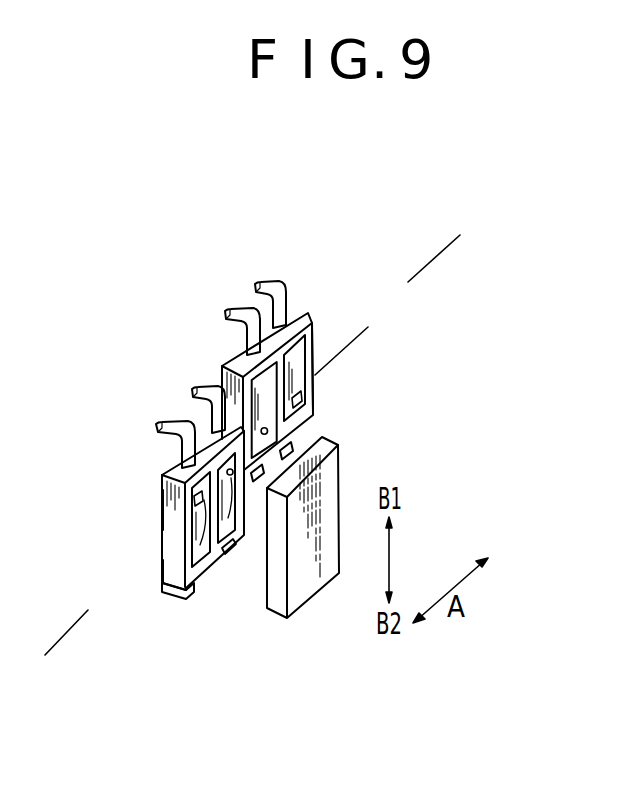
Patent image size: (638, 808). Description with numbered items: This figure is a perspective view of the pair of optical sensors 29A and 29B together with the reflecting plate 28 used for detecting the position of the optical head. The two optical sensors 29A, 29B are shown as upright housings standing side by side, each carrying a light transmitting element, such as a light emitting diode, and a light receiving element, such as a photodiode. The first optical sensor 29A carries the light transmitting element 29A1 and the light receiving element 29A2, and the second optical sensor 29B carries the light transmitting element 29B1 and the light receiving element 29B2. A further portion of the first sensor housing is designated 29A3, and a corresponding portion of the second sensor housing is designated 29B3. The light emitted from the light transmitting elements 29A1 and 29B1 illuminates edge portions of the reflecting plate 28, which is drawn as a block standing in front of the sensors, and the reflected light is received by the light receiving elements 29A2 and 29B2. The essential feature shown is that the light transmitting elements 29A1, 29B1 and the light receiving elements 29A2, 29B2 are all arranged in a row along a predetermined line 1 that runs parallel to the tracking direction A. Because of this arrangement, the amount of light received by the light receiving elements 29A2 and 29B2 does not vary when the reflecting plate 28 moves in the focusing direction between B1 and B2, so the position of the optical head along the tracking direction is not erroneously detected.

The predetermined line 1 is at (445, 245).
The optical sensor 29A is at (298, 291).
The light transmitting element 29A1 is at (268, 431).
The light receiving element 29A2 is at (296, 398).
The side wall of first holder 29A3 is at (312, 345).
The optical sensor 29B is at (154, 470).
The light transmitting element 29B1 is at (223, 560).
The light receiving element 29B2 is at (157, 542).
The side wall of second holder 29B3 is at (168, 507).
The reflecting plate 28 is at (297, 583).